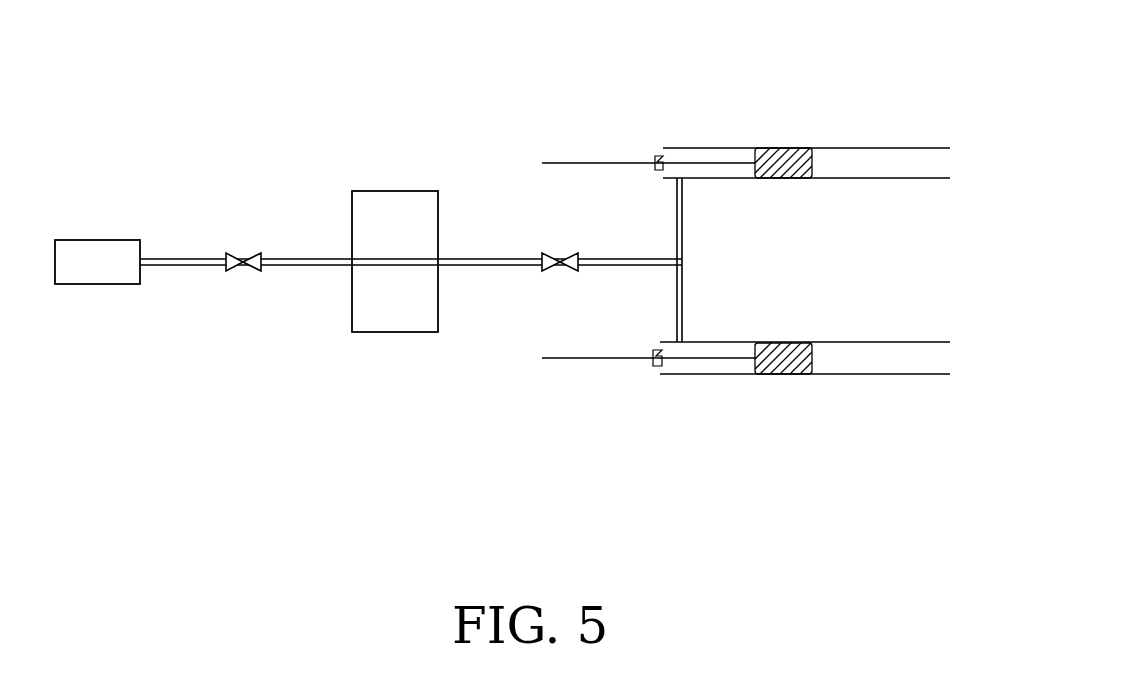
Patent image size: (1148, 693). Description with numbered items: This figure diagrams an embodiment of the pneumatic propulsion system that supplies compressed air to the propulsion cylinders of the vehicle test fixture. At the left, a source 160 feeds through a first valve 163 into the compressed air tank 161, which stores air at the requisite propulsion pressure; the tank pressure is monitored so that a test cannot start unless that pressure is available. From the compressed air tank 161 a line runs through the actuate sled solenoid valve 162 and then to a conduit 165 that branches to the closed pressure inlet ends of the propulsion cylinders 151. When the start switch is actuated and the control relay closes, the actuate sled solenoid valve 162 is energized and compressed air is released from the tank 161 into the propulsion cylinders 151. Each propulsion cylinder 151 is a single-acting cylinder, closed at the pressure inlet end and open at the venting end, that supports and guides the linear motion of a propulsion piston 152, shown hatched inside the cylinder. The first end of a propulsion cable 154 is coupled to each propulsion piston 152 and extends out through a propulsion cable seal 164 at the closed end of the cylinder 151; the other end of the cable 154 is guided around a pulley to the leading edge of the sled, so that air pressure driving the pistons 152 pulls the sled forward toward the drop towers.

The propulsion cylinder 151 is at (877, 376).
The propulsion piston 152 is at (775, 382).
The propulsion cable 154 is at (575, 362).
The gas source 160 is at (100, 240).
The compressed air tank 161 is at (396, 191).
The actuate sled solenoid valve 162 is at (559, 243).
The valve 163 is at (244, 238).
The propulsion cable seal 164 is at (655, 372).
The conduit 165 is at (683, 290).